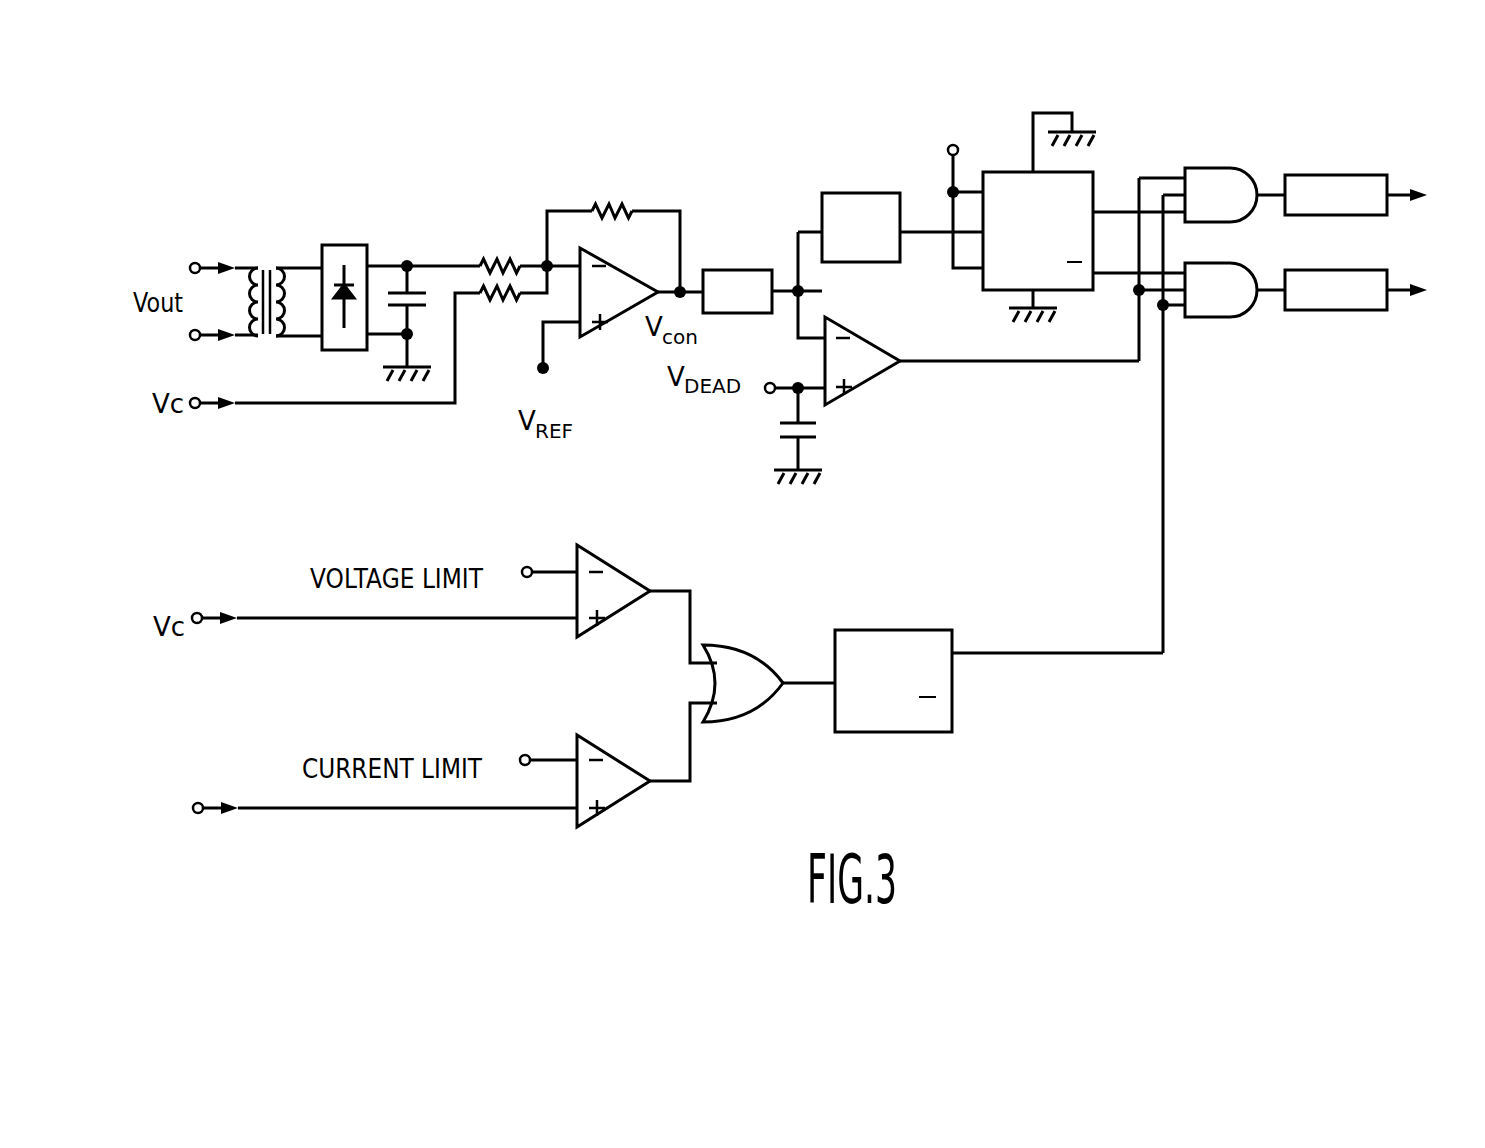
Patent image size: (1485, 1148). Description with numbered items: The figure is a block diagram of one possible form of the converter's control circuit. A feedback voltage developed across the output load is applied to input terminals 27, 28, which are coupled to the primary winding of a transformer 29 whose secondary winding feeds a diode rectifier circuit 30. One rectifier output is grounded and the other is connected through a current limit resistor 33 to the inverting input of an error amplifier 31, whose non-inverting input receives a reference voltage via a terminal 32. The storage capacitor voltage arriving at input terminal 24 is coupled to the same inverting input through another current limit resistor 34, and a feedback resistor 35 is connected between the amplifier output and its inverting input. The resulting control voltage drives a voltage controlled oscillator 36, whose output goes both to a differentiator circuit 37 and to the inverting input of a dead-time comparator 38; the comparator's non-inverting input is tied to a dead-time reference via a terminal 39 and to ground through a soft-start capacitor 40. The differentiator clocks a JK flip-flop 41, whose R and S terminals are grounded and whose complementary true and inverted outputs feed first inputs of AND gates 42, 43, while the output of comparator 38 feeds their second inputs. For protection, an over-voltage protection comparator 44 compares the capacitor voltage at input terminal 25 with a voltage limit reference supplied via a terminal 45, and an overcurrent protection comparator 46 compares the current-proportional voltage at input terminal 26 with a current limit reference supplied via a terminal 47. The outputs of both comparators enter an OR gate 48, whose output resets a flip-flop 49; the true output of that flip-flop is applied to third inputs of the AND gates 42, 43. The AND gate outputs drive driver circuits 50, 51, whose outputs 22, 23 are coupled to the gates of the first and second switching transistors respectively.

The first output Q1 22 is at (1420, 188).
The second output Q2 23 is at (1420, 302).
The input terminal 24 is at (195, 410).
The input terminal 25 is at (197, 612).
The input terminal 26 is at (198, 815).
The input terminal 27 is at (194, 262).
The input terminal 28 is at (191, 342).
The transformer 29 is at (262, 266).
The diode rectifier circuit 30 is at (333, 245).
The error amplifier 31 is at (616, 268).
The terminal 32 is at (545, 375).
The current limit resistor 33 is at (494, 258).
The current limit resistor 34 is at (504, 303).
The feedback resistor 35 is at (617, 205).
The voltage controlled oscillator 36 is at (730, 270).
The differentiator circuit 37 is at (830, 193).
The dead-time comparator 38 is at (866, 332).
The terminal 39 is at (767, 396).
The soft-start capacitor 40 is at (780, 447).
The JK flip-flop 41 is at (990, 292).
The AND gate 42 is at (1196, 168).
The AND gate 43 is at (1200, 317).
The over-voltage protection comparator 44 is at (604, 560).
The terminal 45 is at (527, 566).
The overcurrent protection comparator 46 is at (608, 751).
The terminal 47 is at (525, 754).
The OR gate 48 is at (742, 648).
The flip-flop 49 is at (888, 735).
The driver circuit 50 is at (1320, 175).
The driver circuit 51 is at (1333, 310).